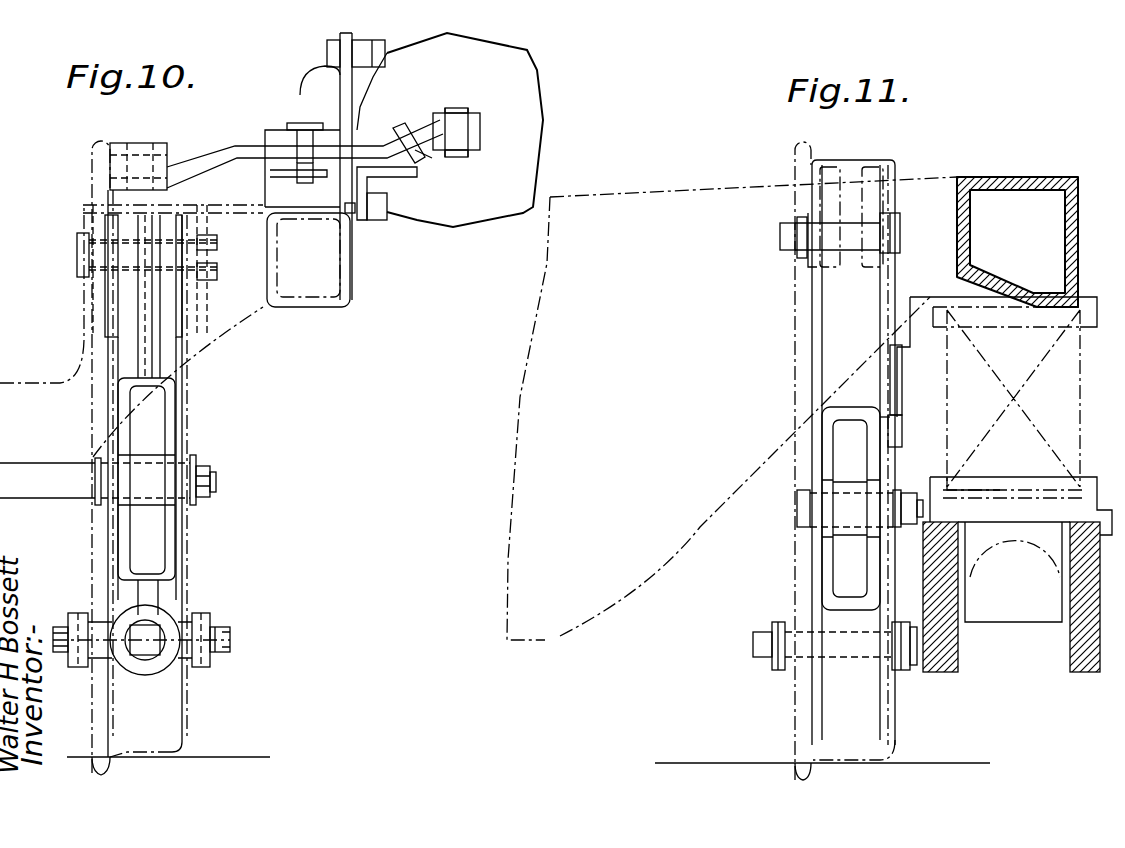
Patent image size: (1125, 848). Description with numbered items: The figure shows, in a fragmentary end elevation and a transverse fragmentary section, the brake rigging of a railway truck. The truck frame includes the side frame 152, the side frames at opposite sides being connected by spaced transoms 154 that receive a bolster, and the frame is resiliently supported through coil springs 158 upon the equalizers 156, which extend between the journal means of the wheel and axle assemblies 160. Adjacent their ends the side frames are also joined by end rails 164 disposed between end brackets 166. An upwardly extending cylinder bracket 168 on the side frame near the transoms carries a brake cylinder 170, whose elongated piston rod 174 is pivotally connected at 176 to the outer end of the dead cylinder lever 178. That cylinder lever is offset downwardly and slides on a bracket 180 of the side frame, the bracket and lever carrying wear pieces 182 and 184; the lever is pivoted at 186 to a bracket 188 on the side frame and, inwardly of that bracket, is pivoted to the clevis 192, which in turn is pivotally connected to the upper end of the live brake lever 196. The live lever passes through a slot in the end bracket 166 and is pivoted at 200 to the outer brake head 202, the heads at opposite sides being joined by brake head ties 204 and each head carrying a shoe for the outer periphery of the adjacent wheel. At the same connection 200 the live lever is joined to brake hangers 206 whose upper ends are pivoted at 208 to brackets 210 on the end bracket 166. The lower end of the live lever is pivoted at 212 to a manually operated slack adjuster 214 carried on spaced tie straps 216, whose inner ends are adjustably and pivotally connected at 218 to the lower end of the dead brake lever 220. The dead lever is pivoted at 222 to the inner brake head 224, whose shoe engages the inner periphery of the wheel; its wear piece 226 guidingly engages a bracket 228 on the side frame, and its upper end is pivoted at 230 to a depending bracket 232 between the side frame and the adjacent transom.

In FIG. 10, the side frame 152 is at (335, 305).
In FIG. 11, the side frame 152 is at (1078, 258).
In FIG. 11, the transom 154 is at (558, 635).
In FIG. 11, the equalizer 156 is at (945, 645).
In FIG. 11, the coil spring 158 is at (1070, 405).
In FIG. 10, the wheel and axle assembly 160 is at (170, 723).
In FIG. 11, the wheel and axle assembly 160 is at (795, 722).
In FIG. 10, the end rail 164 is at (23, 393).
In FIG. 10, the end bracket 166 is at (205, 210).
In FIG. 10, the cylinder bracket 168 is at (328, 62).
In FIG. 10, the brake cylinder 170 is at (500, 220).
In FIG. 10, the piston rod 174 is at (478, 120).
In FIG. 10, the pivotal connection 176 is at (462, 110).
In FIG. 10, the dead cylinder lever 178 is at (212, 137).
In FIG. 10, the bracket 180 is at (387, 212).
In FIG. 10, the wear piece 182 is at (422, 165).
In FIG. 10, the wear piece 184 is at (420, 153).
In FIG. 10, the pivotal connection 186 is at (302, 128).
In FIG. 10, the bracket 188 is at (270, 130).
In FIG. 10, the clevis 192 is at (118, 158).
In FIG. 10, the live brake lever 196 is at (148, 340).
In FIG. 10, the pivotal connection 200 is at (203, 467).
In FIG. 10, the outer brake head 202 is at (167, 533).
In FIG. 10, the brake head tie 204 is at (44, 488).
In FIG. 10, the brake hanger 206 is at (188, 380).
In FIG. 10, the pivotal connection 208 is at (210, 262).
In FIG. 10, the bracket 210 is at (212, 228).
In FIG. 10, the pivotal connection 212 is at (230, 635).
In FIG. 10, the slack adjuster 214 is at (145, 640).
In FIG. 10, the tie strap 216 is at (78, 613).
In FIG. 11, the tie strap 216 is at (785, 672).
In FIG. 11, the adjustable pivotal connection 218 is at (753, 645).
In FIG. 11, the dead brake lever 220 is at (815, 572).
In FIG. 11, the pivotal connection 222 is at (797, 520).
In FIG. 11, the inner brake head 224 is at (845, 442).
In FIG. 11, the wear piece 226 is at (893, 448).
In FIG. 11, the bracket 228 is at (902, 418).
In FIG. 11, the pivotal connection 230 is at (795, 255).
In FIG. 11, the depending bracket 232 is at (870, 205).